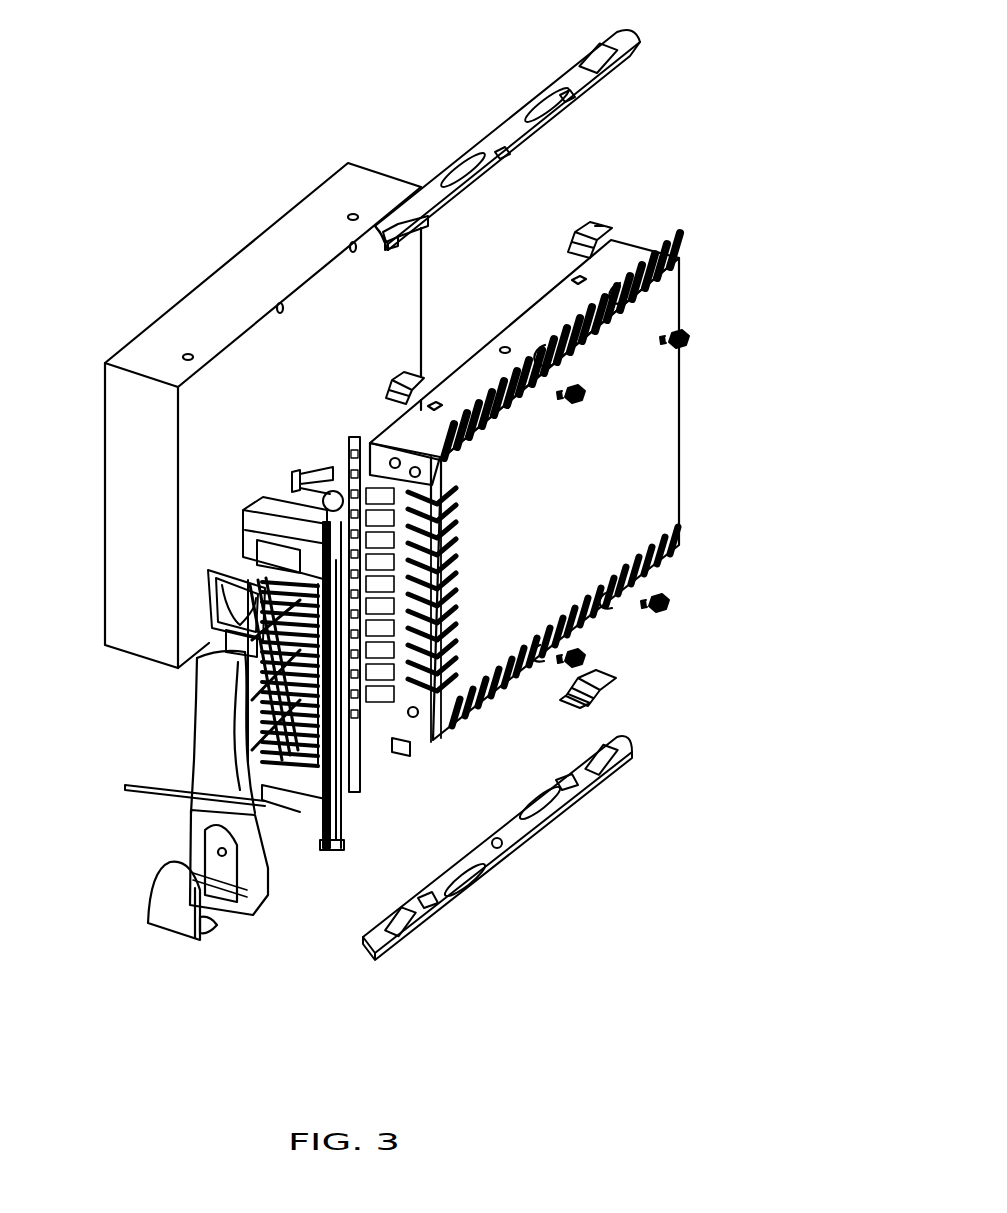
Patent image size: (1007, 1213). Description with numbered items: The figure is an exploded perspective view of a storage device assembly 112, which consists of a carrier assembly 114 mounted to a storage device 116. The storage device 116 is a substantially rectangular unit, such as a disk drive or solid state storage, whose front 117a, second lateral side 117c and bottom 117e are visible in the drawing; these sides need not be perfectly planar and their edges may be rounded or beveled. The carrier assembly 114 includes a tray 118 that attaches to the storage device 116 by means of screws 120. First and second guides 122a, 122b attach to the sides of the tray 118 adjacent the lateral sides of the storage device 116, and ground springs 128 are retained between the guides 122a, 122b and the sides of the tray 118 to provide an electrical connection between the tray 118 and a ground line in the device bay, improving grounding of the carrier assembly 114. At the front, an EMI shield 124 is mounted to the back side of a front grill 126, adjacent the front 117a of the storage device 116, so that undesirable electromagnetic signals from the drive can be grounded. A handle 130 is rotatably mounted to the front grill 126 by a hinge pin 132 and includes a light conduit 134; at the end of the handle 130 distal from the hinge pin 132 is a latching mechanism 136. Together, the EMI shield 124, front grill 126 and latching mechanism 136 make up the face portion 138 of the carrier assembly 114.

The storage device assembly 112 is at (812, 183).
The carrier assembly 114 is at (99, 104).
The storage device 116 is at (215, 285).
The front 117a is at (158, 504).
The second lateral side 117c is at (330, 241).
The bottom 117e is at (393, 315).
The tray 118 is at (668, 436).
The screws 120 is at (692, 338).
The first guide 122a is at (528, 852).
The second guide 122b is at (617, 70).
The EMI shield 124 is at (320, 466).
The front grill 126 is at (352, 802).
The ground springs 128 is at (590, 224).
The handle 130 is at (197, 755).
The hinge pin 132 is at (122, 787).
The light conduit 134 is at (175, 938).
The latching mechanism 136 is at (210, 620).
The face portion 138 is at (243, 972).